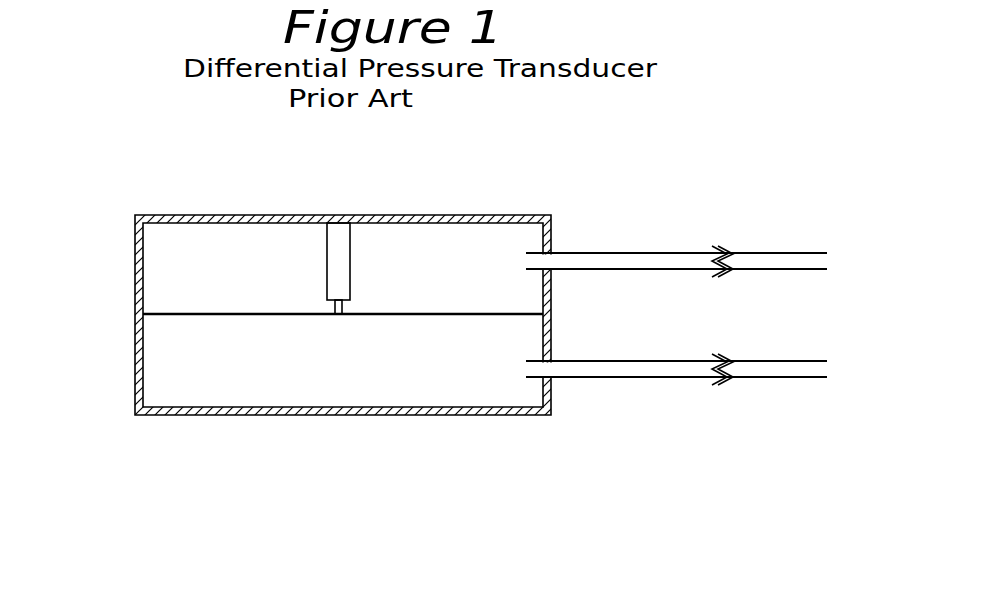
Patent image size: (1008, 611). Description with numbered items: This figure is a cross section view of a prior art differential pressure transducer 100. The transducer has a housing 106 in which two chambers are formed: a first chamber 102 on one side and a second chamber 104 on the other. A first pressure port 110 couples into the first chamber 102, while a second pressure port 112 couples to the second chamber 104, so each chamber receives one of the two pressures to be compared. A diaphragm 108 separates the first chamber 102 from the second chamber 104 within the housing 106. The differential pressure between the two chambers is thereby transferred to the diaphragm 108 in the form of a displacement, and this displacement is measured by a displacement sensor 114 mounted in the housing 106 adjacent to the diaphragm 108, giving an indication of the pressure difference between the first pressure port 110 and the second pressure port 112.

The differential pressure transducer 100 is at (384, 166).
The first chamber 102 is at (176, 282).
The second chamber 104 is at (176, 367).
The housing 106 is at (135, 414).
The diaphragm 108 is at (243, 315).
The first pressure port 110 is at (705, 262).
The second pressure port 112 is at (705, 370).
The displacement sensor 114 is at (333, 262).